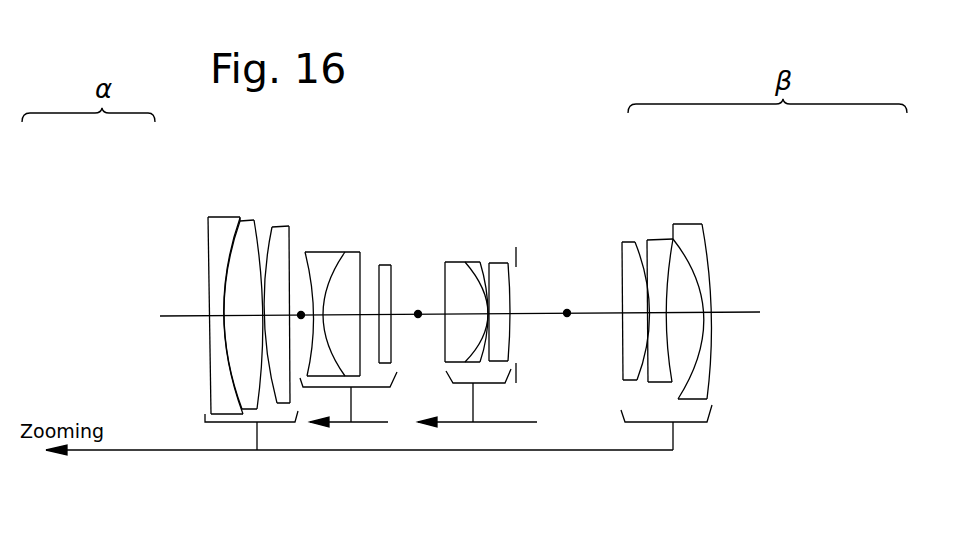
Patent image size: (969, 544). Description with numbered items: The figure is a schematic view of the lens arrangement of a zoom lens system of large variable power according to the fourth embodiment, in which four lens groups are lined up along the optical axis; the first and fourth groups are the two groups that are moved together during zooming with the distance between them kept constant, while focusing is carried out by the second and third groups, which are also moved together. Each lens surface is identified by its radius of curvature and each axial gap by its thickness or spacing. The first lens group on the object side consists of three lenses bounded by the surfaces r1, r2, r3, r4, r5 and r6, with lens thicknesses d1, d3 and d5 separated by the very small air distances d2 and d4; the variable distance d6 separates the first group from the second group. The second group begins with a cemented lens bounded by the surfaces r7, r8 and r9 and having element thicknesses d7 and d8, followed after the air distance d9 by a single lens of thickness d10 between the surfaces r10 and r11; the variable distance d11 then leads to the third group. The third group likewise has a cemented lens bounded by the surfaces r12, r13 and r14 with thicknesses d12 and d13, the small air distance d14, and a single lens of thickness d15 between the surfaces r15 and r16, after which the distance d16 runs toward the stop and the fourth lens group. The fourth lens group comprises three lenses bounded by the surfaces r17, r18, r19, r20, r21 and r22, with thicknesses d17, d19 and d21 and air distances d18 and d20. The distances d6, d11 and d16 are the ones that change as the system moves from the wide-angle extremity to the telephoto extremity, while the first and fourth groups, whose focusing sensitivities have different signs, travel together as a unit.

The radius of curvature of first lens surface r1 is at (209, 217).
The radius of curvature of second lens surface r2 is at (239, 217).
The radius of curvature of third lens surface r3 is at (241, 219).
The radius of curvature of fourth lens surface r4 is at (253, 220).
The radius of curvature of fifth lens surface r5 is at (271, 227).
The radius of curvature of sixth lens surface r6 is at (289, 226).
The radius of curvature of seventh lens surface r7 is at (305, 252).
The radius of curvature of eighth lens surface r8 is at (344, 252).
The radius of curvature of ninth lens surface r9 is at (358, 252).
The radius of curvature of tenth lens surface r10 is at (378, 265).
The radius of curvature of eleventh lens surface r11 is at (389, 265).
The radius of curvature of twelfth lens surface r12 is at (445, 262).
The radius of curvature of thirteenth lens surface r13 is at (464, 262).
The radius of curvature of fourteenth lens surface r14 is at (481, 262).
The radius of curvature of fifteenth lens surface r15 is at (490, 262).
The radius of curvature of sixteenth lens surface r16 is at (506, 262).
The radius of curvature of seventeenth lens surface r17 is at (623, 240).
The radius of curvature of eighteenth lens surface r18 is at (634, 240).
The radius of curvature of nineteenth lens surface r19 is at (647, 239).
The radius of curvature of twentieth lens surface r20 is at (674, 239).
The radius of curvature of twenty-first lens surface r21 is at (702, 224).
The radius of curvature of twenty-second lens surface r22 is at (676, 238).
The lens thickness d1 is at (223, 316).
The distance between lenses d2 is at (237, 316).
The lens thickness d3 is at (250, 315).
The distance between lenses d4 is at (260, 315).
The lens thickness d5 is at (280, 315).
The distance between lenses d6 is at (299, 315).
The lens thickness d7 is at (317, 315).
The lens thickness d8 is at (340, 315).
The distance between lenses d9 is at (370, 315).
The lens thickness d10 is at (380, 314).
The distance between lenses d11 is at (418, 314).
The lens thickness d12 is at (466, 314).
The lens thickness d13 is at (486, 314).
The distance between lenses d14 is at (500, 314).
The lens thickness d15 is at (512, 314).
The distance between lenses d16 is at (555, 313).
The lens thickness d17 is at (635, 313).
The distance between lenses d18 is at (650, 313).
The lens thickness d19 is at (660, 313).
The distance between lenses d20 is at (685, 312).
The lens thickness d21 is at (706, 312).